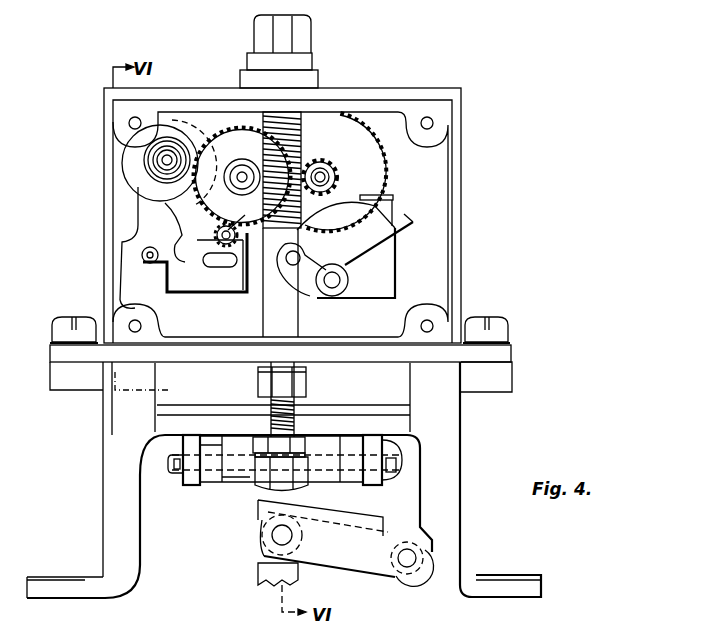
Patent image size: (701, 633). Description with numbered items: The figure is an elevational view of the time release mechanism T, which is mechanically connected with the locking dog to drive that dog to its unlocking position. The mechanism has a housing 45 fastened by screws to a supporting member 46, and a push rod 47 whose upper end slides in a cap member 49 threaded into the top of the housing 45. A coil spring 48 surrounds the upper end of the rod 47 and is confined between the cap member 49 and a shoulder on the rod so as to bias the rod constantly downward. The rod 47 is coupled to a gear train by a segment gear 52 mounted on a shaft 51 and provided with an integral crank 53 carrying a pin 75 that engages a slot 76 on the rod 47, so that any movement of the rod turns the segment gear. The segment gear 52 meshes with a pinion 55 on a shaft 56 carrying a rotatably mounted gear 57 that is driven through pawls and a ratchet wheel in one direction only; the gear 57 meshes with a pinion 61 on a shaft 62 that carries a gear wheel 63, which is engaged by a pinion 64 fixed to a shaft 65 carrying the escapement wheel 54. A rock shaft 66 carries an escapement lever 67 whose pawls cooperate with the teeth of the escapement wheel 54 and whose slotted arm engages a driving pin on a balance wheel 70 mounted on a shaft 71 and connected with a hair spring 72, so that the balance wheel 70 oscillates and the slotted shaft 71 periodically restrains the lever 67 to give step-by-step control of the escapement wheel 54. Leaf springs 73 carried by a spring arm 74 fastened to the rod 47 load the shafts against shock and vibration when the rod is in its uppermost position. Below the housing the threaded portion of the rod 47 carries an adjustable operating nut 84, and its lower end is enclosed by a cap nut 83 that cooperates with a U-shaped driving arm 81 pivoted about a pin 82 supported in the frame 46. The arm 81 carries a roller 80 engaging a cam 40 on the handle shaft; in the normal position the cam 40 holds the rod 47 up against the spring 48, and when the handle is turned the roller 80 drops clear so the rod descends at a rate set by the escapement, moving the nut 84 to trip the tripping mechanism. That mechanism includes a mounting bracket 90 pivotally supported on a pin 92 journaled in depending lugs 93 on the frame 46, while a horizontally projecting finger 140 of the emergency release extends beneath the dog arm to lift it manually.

The time release mechanism T is at (462, 268).
The cam 40 is at (258, 567).
The housing 45 is at (410, 88).
The supporting member 46 is at (462, 412).
The push rod 47 is at (263, 323).
The coil spring 48 is at (303, 128).
The cap member 49 is at (318, 22).
The shaft 51 is at (342, 280).
The segment gear 52 is at (400, 224).
The crank 53 is at (318, 300).
The escapement wheel 54 is at (150, 250).
The pinion 55 is at (340, 175).
The shaft 56 is at (320, 160).
The gear 57 is at (387, 152).
The pinion 61 is at (259, 176).
The shaft 62 is at (242, 172).
The gear wheel 63 is at (213, 128).
The pinion 64 is at (228, 222).
The shaft 65 is at (245, 216).
The rock shaft 66 is at (142, 255).
The escapement lever 67 is at (120, 308).
The balance wheel 70 is at (160, 155).
The shaft 71 is at (165, 168).
The hair spring 72 is at (150, 185).
The leaf springs 73 is at (213, 277).
The spring arm 74 is at (393, 197).
The pin 75 is at (346, 224).
The slot 76 is at (285, 272).
The roller 80 is at (270, 537).
The U-shaped driving arm 81 is at (322, 556).
The pin 82 is at (407, 567).
The cap nut 83 is at (263, 480).
The operating nut 84 is at (306, 388).
The mounting bracket 90 is at (205, 482).
The pin 92 is at (168, 463).
The depending lugs 93 is at (383, 445).
The horizontally projecting finger 140 is at (323, 519).